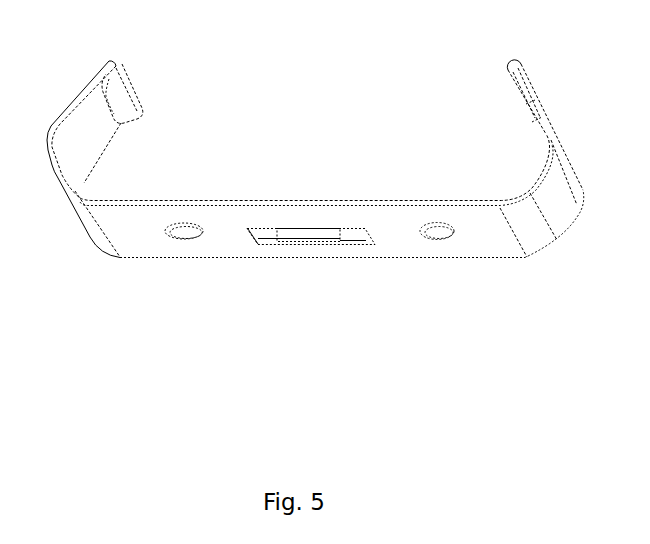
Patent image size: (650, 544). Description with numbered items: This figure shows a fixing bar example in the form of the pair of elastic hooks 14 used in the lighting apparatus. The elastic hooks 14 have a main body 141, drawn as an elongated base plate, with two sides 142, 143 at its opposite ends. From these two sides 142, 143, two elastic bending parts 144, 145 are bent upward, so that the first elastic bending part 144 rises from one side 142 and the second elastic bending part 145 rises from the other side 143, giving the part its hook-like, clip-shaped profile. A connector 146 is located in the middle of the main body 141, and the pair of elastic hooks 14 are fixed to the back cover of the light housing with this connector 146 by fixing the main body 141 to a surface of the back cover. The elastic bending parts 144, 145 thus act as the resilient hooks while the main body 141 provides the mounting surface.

The pair of elastic hooks 14 is at (320, 193).
The main body 141 is at (228, 233).
The side 142 is at (57, 170).
The side 143 is at (552, 200).
The elastic bending part 144 is at (94, 118).
The elastic bending part 145 is at (530, 111).
The connector 146 is at (308, 242).